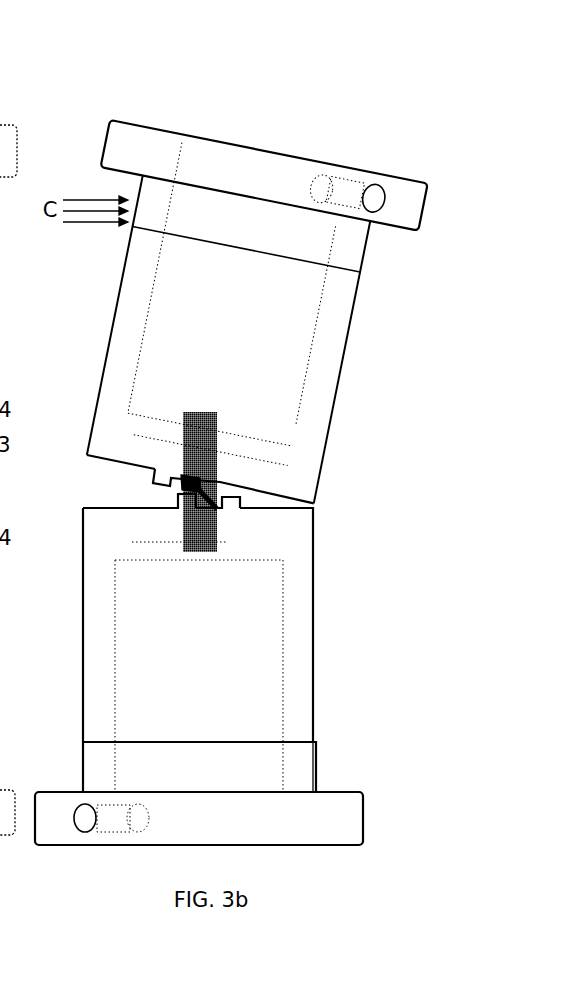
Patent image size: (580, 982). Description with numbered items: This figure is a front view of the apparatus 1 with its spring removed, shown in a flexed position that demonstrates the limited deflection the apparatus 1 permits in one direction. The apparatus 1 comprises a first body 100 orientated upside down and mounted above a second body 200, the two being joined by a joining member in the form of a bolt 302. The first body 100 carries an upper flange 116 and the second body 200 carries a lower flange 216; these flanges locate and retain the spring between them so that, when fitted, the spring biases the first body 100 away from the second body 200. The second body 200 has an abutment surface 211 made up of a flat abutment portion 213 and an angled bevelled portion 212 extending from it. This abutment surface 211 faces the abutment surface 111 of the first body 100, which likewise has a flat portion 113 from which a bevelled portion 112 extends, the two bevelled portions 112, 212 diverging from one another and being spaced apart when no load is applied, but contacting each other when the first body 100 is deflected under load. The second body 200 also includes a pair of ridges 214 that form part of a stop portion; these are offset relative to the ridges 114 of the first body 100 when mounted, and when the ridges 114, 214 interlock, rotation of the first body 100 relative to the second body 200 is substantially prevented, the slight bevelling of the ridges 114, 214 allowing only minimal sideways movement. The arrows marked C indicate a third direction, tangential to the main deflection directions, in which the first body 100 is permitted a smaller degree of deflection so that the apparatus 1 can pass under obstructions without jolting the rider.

The apparatus 1 is at (368, 90).
The first body 100 is at (128, 305).
The abutment surface 111 is at (89, 446).
The bevelled portion 112 is at (247, 480).
The flat portion 113 is at (277, 492).
The ridges 114 is at (158, 478).
The upper flange 116 is at (410, 192).
The second body 200 is at (95, 640).
The abutment surface 211 is at (326, 502).
The bevelled portion 212 is at (253, 518).
The flat abutment portion 213 is at (112, 510).
The ridges 214 is at (203, 510).
The lower flange 216 is at (342, 803).
The bolt 302 is at (185, 533).